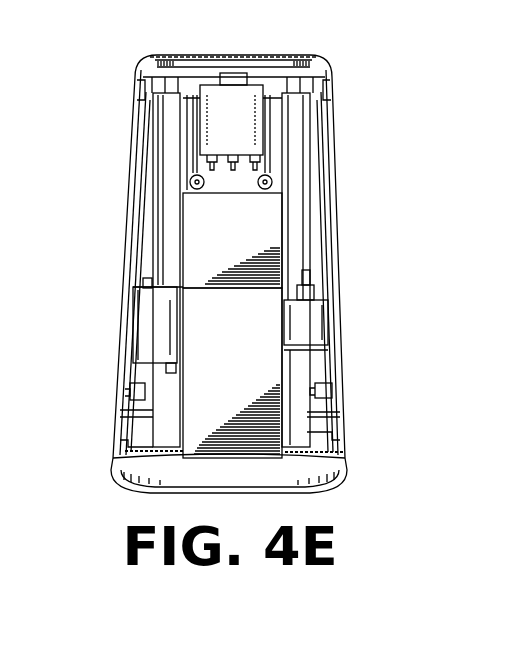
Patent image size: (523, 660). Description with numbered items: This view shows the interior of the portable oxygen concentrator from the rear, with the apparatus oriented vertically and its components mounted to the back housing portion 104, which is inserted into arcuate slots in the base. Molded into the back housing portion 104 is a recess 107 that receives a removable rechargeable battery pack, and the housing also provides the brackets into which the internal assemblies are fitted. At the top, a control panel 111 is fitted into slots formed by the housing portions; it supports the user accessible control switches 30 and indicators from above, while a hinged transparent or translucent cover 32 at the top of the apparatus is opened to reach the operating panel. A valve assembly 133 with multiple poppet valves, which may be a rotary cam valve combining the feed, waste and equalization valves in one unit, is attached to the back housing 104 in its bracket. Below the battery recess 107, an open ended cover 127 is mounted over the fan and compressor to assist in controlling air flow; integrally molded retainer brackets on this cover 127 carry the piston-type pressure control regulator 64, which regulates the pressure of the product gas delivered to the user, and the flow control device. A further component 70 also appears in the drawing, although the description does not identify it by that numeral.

The back housing portion 104 is at (348, 378).
The control panel 111 is at (268, 62).
The control switches 30 is at (167, 253).
The hinged transparent or translucent cover 32 is at (300, 238).
The valve assembly 133 is at (237, 145).
The recess 107 is at (208, 247).
The open ended cover 127 is at (208, 353).
The piston-type pressure control regulator 64 is at (153, 320).
The right motor module 70 is at (308, 330).